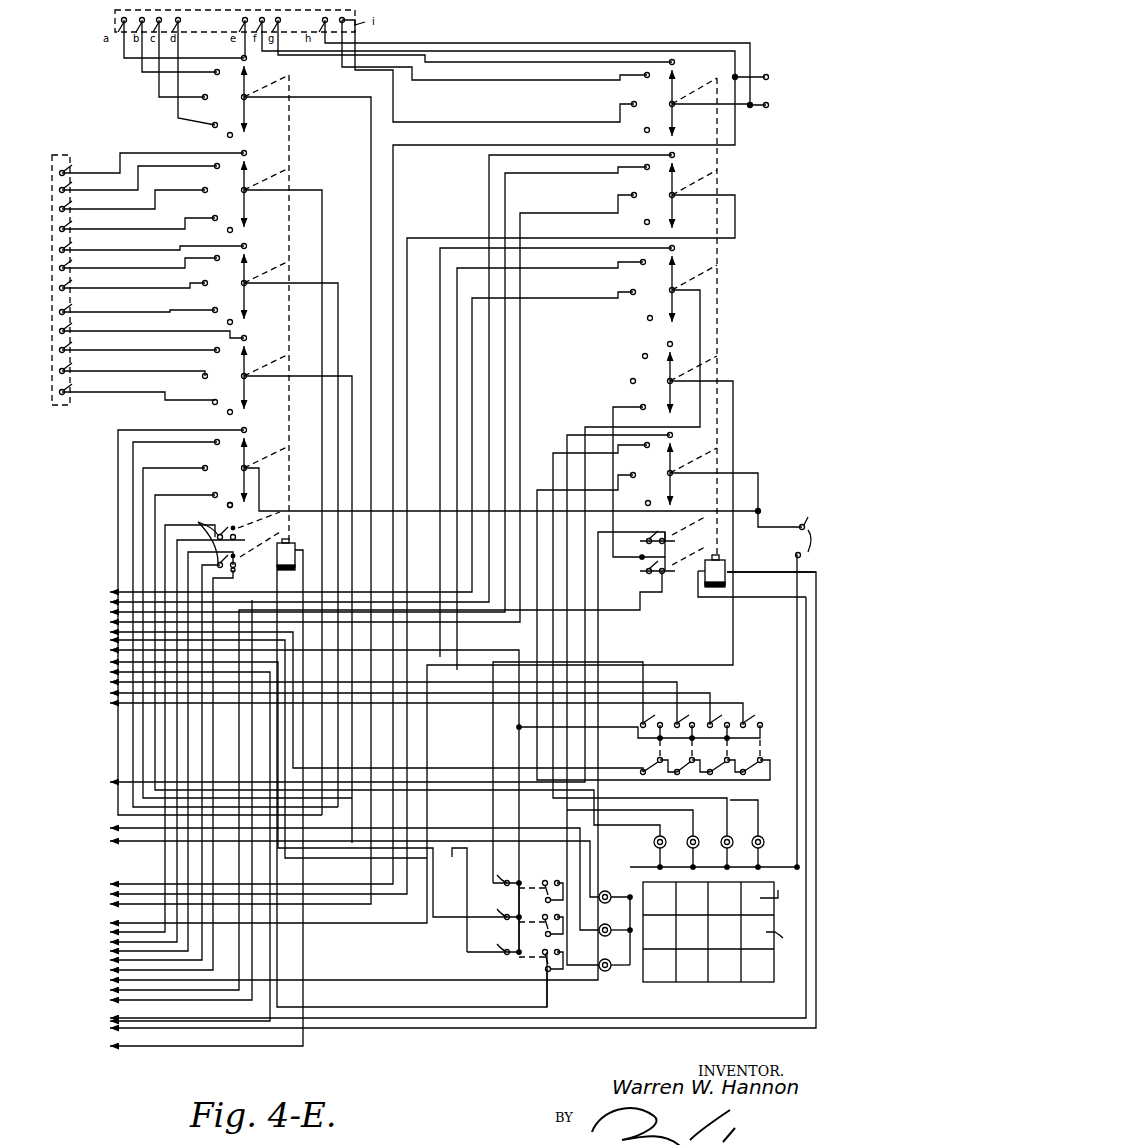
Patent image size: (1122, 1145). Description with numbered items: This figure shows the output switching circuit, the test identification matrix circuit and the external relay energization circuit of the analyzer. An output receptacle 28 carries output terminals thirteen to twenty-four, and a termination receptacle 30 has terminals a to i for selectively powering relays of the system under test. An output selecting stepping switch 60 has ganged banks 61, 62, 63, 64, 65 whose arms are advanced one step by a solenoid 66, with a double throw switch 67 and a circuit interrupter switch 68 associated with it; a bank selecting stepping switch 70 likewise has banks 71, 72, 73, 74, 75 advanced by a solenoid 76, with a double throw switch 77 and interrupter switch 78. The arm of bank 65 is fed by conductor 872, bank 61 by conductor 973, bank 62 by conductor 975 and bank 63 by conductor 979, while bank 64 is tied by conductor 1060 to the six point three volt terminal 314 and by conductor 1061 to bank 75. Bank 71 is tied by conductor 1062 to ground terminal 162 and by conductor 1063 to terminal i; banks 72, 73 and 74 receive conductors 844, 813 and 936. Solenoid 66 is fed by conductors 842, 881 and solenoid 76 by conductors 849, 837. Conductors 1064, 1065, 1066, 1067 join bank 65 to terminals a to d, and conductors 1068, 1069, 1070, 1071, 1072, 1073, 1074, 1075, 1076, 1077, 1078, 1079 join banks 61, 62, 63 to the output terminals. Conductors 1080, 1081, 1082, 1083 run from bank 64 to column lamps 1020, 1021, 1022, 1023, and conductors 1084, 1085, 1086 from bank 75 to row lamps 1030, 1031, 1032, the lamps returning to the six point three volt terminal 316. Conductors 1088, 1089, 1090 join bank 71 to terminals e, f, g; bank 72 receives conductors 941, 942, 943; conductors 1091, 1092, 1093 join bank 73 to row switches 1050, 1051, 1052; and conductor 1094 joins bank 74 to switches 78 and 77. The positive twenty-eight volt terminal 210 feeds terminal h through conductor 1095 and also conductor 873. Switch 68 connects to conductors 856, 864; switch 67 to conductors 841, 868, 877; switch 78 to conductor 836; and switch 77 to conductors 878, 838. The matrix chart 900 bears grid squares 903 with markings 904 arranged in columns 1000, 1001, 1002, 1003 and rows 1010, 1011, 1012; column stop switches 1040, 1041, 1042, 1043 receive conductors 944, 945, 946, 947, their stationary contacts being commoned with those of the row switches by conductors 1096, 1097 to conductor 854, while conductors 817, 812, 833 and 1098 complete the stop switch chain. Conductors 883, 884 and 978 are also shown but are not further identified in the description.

The termination receptacle 30 is at (110, 22).
The output receptacle 28 is at (57, 155).
The output selecting stepping switch 60 is at (293, 141).
The switch bank 61 is at (242, 187).
The switch bank 62 is at (242, 279).
The switch bank 63 is at (242, 370).
The switch bank 64 is at (242, 463).
The switch bank 65 is at (242, 92).
The solenoid 66 is at (288, 548).
The double throw switch 67 is at (230, 538).
The circuit interrupter switch 68 is at (219, 501).
The bank selecting stepping switch 70 is at (722, 276).
The switch bank 71 is at (687, 92).
The switch bank 72 is at (670, 185).
The switch bank 73 is at (670, 279).
The switch bank 74 is at (669, 372).
The switch bank 75 is at (669, 465).
The solenoid 76 is at (728, 566).
The double throw switch 77 is at (652, 574).
The circuit interrupter switch 78 is at (672, 530).
The ground terminal 162 is at (778, 115).
The positive 28 volt supply terminal 210 is at (786, 68).
The 6.3 volt supply terminal 314 is at (818, 529).
The 6.3 volt supply terminal 316 is at (796, 555).
The conductor 812 is at (360, 788).
The conductor 813 is at (421, 539).
The conductor 817 is at (298, 797).
The conductor 833 is at (640, 771).
The conductor 836 is at (372, 752).
The conductor 837 is at (443, 810).
The conductor 838 is at (374, 803).
The conductor 841 is at (220, 727).
The conductor 842 is at (447, 804).
The conductor 844 is at (445, 544).
The conductor 849 is at (439, 796).
The conductor 854 is at (492, 650).
The conductor 856 is at (138, 713).
The conductor 864 is at (88, 942).
The conductor 868 is at (220, 712).
The conductor 872 is at (225, 488).
The conductor 873 is at (433, 483).
The conductor 877 is at (160, 772).
The conductor 878 is at (359, 784).
The conductor 881 is at (190, 801).
The conductor 883 is at (70, 608).
The conductor 884 is at (177, 732).
The matrix chart 900 is at (774, 982).
The grid squares 903 is at (786, 935).
The markings 904 is at (783, 888).
The conductor 936 is at (431, 654).
The conductor 941 is at (378, 378).
The conductor 942 is at (363, 389).
The conductor 943 is at (353, 408).
The conductor 944 is at (374, 768).
The conductor 945 is at (399, 695).
The conductor 946 is at (406, 701).
The conductor 947 is at (429, 708).
The conductor 973 is at (291, 491).
The conductor 975 is at (339, 596).
The conductor 978 is at (118, 815).
The conductor 979 is at (335, 622).
The vertical column 1000 is at (655, 985).
The vertical column 1001 is at (686, 993).
The vertical column 1002 is at (722, 985).
The vertical column 1003 is at (749, 996).
The horizontal row 1010 is at (796, 900).
The horizontal row 1011 is at (796, 916).
The horizontal row 1012 is at (796, 953).
The column indicating lamp 1020 is at (644, 851).
The column indicating lamp 1021 is at (681, 851).
The column indicating lamp 1022 is at (715, 851).
The column indicating lamp 1023 is at (747, 833).
The row indicating lamp 1030 is at (615, 914).
The row indicating lamp 1031 is at (615, 917).
The row indicating lamp 1032 is at (613, 952).
The stop switch 1040 is at (661, 745).
The stop switch 1041 is at (695, 745).
The stop switch 1042 is at (729, 745).
The stop switch 1043 is at (764, 745).
The double pole switch 1050 is at (520, 888).
The double pole switch 1051 is at (520, 916).
The double pole switch 1052 is at (530, 975).
The conductor 1060 is at (501, 489).
The conductor 1061 is at (736, 500).
The conductor 1062 is at (694, 317).
The conductor 1063 is at (545, 64).
The conductor 1064 is at (172, 50).
The conductor 1065 is at (161, 58).
The conductor 1066 is at (161, 65).
The conductor 1067 is at (796, 637).
The conductor 1068 is at (153, 156).
The conductor 1069 is at (139, 173).
The conductor 1070 is at (133, 191).
The conductor 1071 is at (138, 221).
The conductor 1072 is at (153, 242).
The conductor 1073 is at (139, 261).
The conductor 1074 is at (133, 281).
The conductor 1075 is at (138, 303).
The conductor 1076 is at (153, 326).
The conductor 1077 is at (139, 342).
The conductor 1078 is at (133, 365).
The conductor 1079 is at (138, 388).
The conductor 1080 is at (220, 613).
The conductor 1081 is at (235, 617).
The conductor 1082 is at (247, 623).
The conductor 1083 is at (405, 651).
The conductor 1084 is at (613, 407).
The conductor 1085 is at (616, 689).
The conductor 1086 is at (624, 640).
The conductor 1088 is at (475, 48).
The conductor 1089 is at (494, 59).
The conductor 1090 is at (494, 77).
The conductor 1091 is at (526, 466).
The conductor 1092 is at (457, 352).
The conductor 1093 is at (542, 452).
The conductor 1094 is at (607, 384).
The conductor 1095 is at (513, 50).
The conductor 1096 is at (657, 730).
The conductor 1097 is at (515, 877).
The conductor 1098 is at (653, 636).